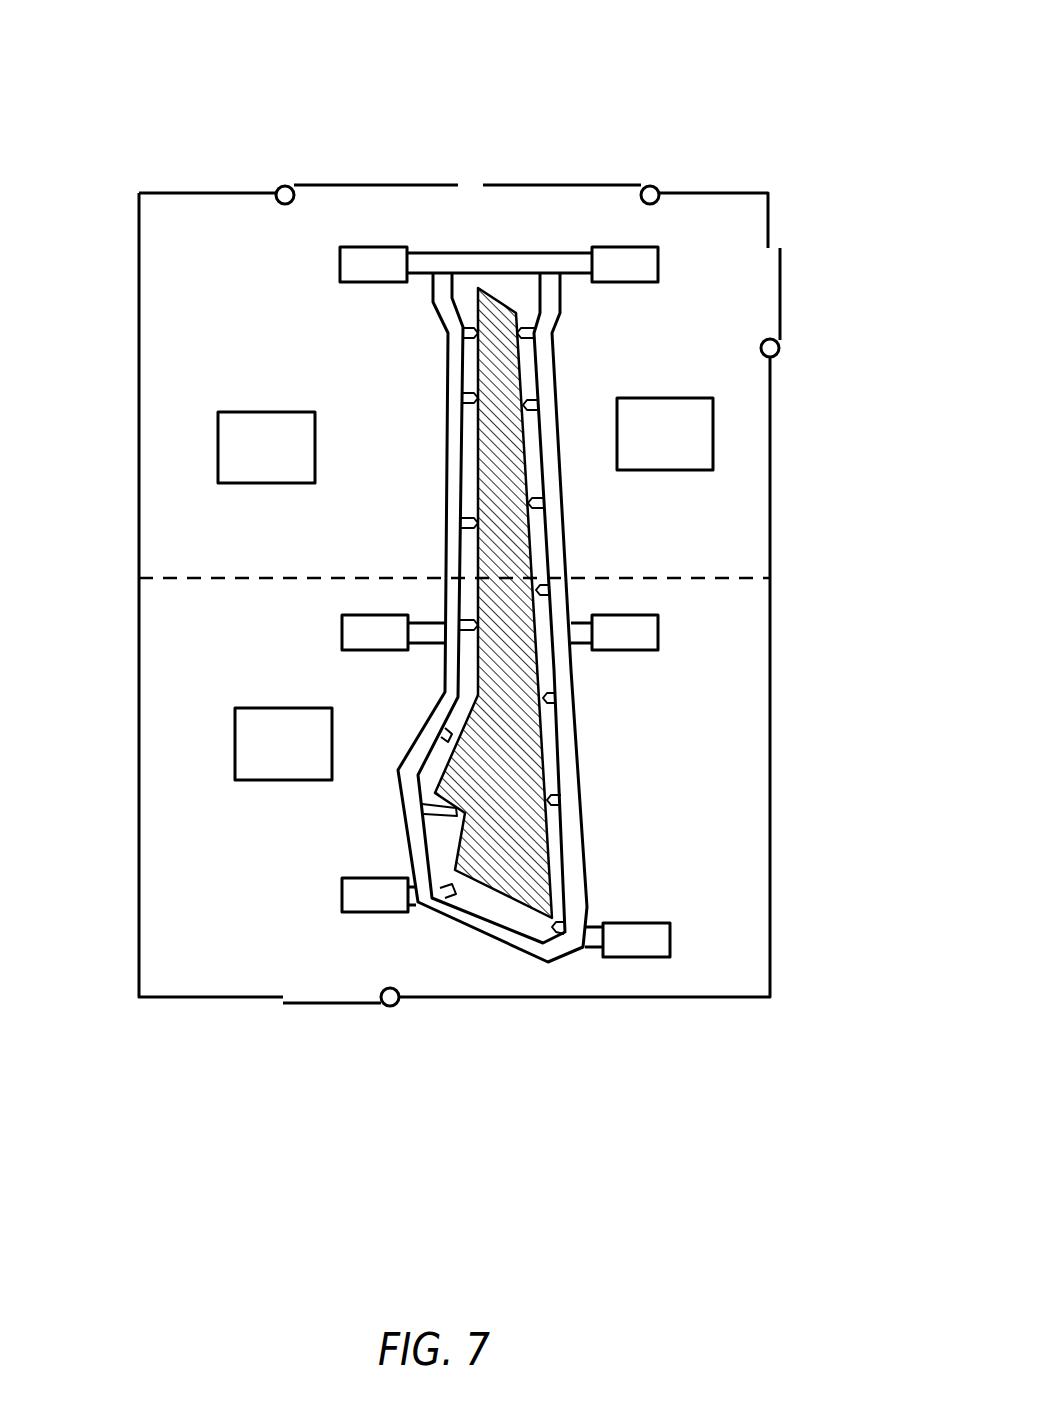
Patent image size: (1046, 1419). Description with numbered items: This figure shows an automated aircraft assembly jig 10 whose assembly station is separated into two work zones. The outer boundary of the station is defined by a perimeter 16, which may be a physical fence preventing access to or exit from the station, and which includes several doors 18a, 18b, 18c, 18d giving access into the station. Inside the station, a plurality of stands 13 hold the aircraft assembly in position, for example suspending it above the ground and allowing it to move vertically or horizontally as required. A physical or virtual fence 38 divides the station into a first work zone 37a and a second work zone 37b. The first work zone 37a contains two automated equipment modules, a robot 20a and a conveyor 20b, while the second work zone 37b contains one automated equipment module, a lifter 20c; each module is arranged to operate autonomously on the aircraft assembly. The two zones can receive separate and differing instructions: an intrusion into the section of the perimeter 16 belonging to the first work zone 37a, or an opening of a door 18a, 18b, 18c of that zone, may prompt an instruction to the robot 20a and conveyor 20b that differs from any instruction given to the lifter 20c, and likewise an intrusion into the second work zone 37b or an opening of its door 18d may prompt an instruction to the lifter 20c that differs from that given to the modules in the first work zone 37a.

The automated aircraft assembly jig 10 is at (767, 106).
The stands 13 is at (370, 258).
The perimeter 16 is at (139, 797).
The door 18a is at (370, 185).
The door 18b is at (565, 185).
The door 18c is at (782, 290).
The door 18d is at (333, 1007).
The robot 20a is at (295, 460).
The conveyor 20b is at (693, 447).
The lifter 20c is at (313, 757).
The first work zone 37a is at (216, 265).
The second work zone 37b is at (229, 935).
The fence 38 is at (740, 627).